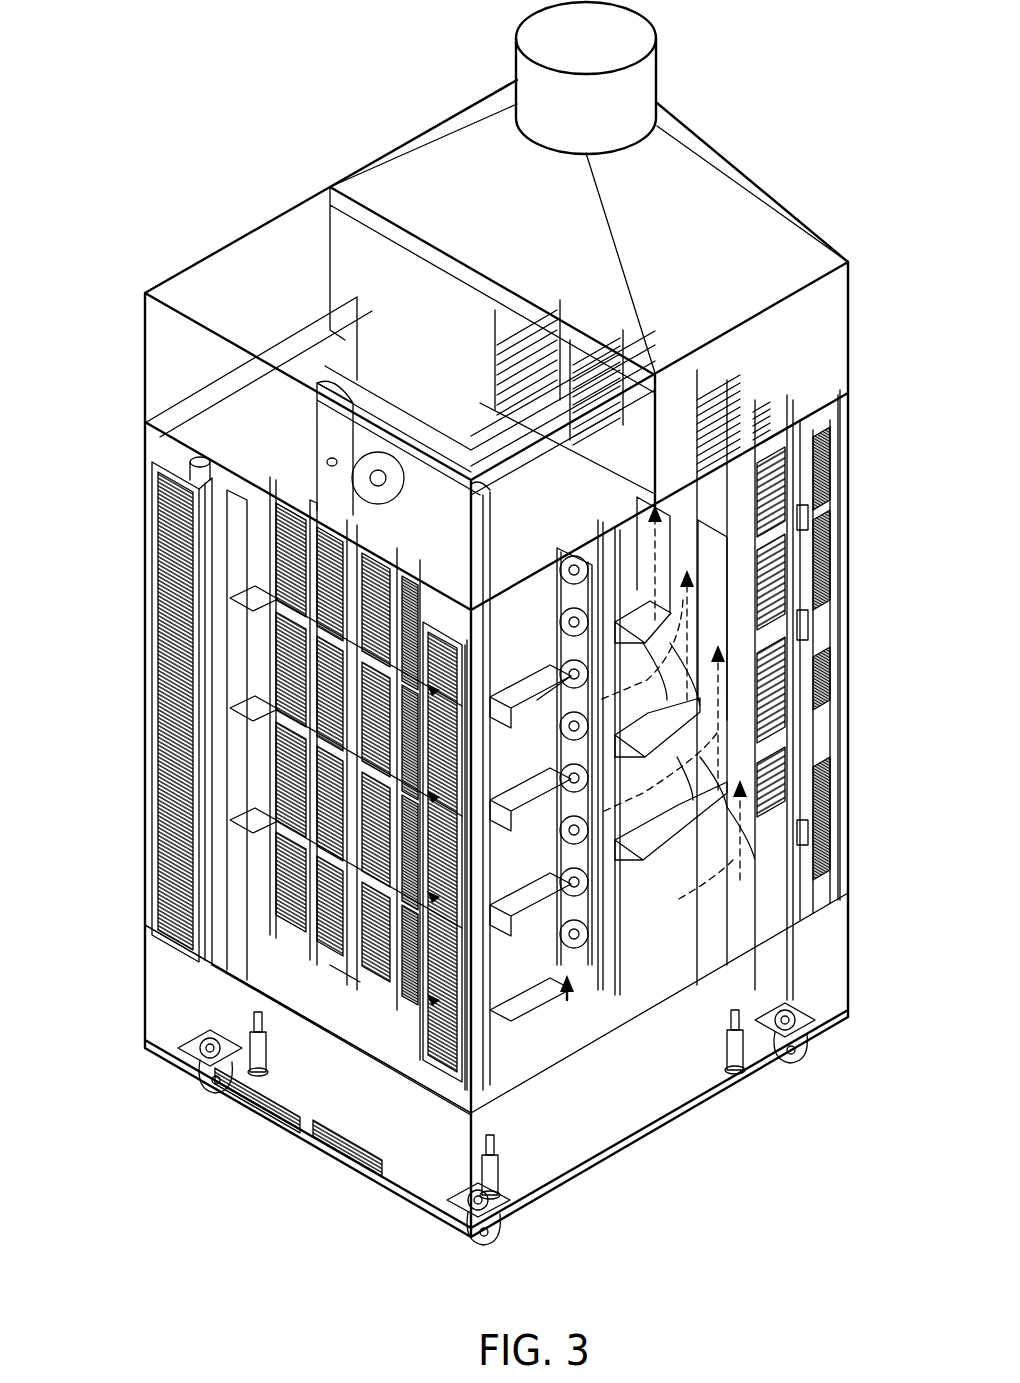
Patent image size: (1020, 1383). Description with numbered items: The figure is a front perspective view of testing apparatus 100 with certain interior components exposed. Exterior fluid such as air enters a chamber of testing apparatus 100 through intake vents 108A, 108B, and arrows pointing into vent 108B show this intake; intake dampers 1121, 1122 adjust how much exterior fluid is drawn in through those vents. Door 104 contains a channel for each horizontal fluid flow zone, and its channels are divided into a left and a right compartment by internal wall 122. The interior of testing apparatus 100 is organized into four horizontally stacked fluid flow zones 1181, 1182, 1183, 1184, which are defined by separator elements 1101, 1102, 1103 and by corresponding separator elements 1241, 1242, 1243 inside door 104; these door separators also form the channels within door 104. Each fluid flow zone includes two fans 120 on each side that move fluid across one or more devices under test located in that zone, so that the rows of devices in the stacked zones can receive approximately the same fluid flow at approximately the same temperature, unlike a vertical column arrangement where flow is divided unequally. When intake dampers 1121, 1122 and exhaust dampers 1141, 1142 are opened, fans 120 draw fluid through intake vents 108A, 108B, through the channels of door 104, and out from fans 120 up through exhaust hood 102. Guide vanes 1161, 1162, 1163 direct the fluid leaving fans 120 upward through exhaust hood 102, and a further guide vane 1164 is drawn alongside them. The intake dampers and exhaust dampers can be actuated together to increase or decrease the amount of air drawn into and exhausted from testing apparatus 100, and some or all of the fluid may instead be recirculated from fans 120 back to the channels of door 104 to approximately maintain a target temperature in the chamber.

The testing apparatus 100 is at (203, 150).
The exhaust hood 102 is at (775, 228).
The door 104 is at (277, 490).
The intake vent 108A is at (167, 694).
The intake vent 108B is at (460, 1053).
The separator element 1101 is at (537, 703).
The separator element 1102 is at (343, 973).
The separator element 1103 is at (568, 1002).
The intake damper 1121 is at (200, 458).
The intake damper 1122 is at (493, 835).
The exhaust damper 1141 is at (333, 385).
The exhaust damper 1142 is at (592, 862).
The guide vane 1161 is at (630, 633).
The guide vane 1162 is at (657, 747).
The guide vane 1163 is at (693, 833).
The fourth baffle 1164 is at (757, 827).
The fluid flow zone 1181 is at (500, 662).
The fluid flow zone 1182 is at (536, 773).
The fluid flow zone 1183 is at (539, 877).
The fluid flow zone 1184 is at (531, 1003).
The fan 120 is at (603, 957).
The internal wall 122 is at (345, 975).
The separator element 1241 is at (257, 598).
The separator element 1242 is at (257, 707).
The separator element 1243 is at (258, 822).